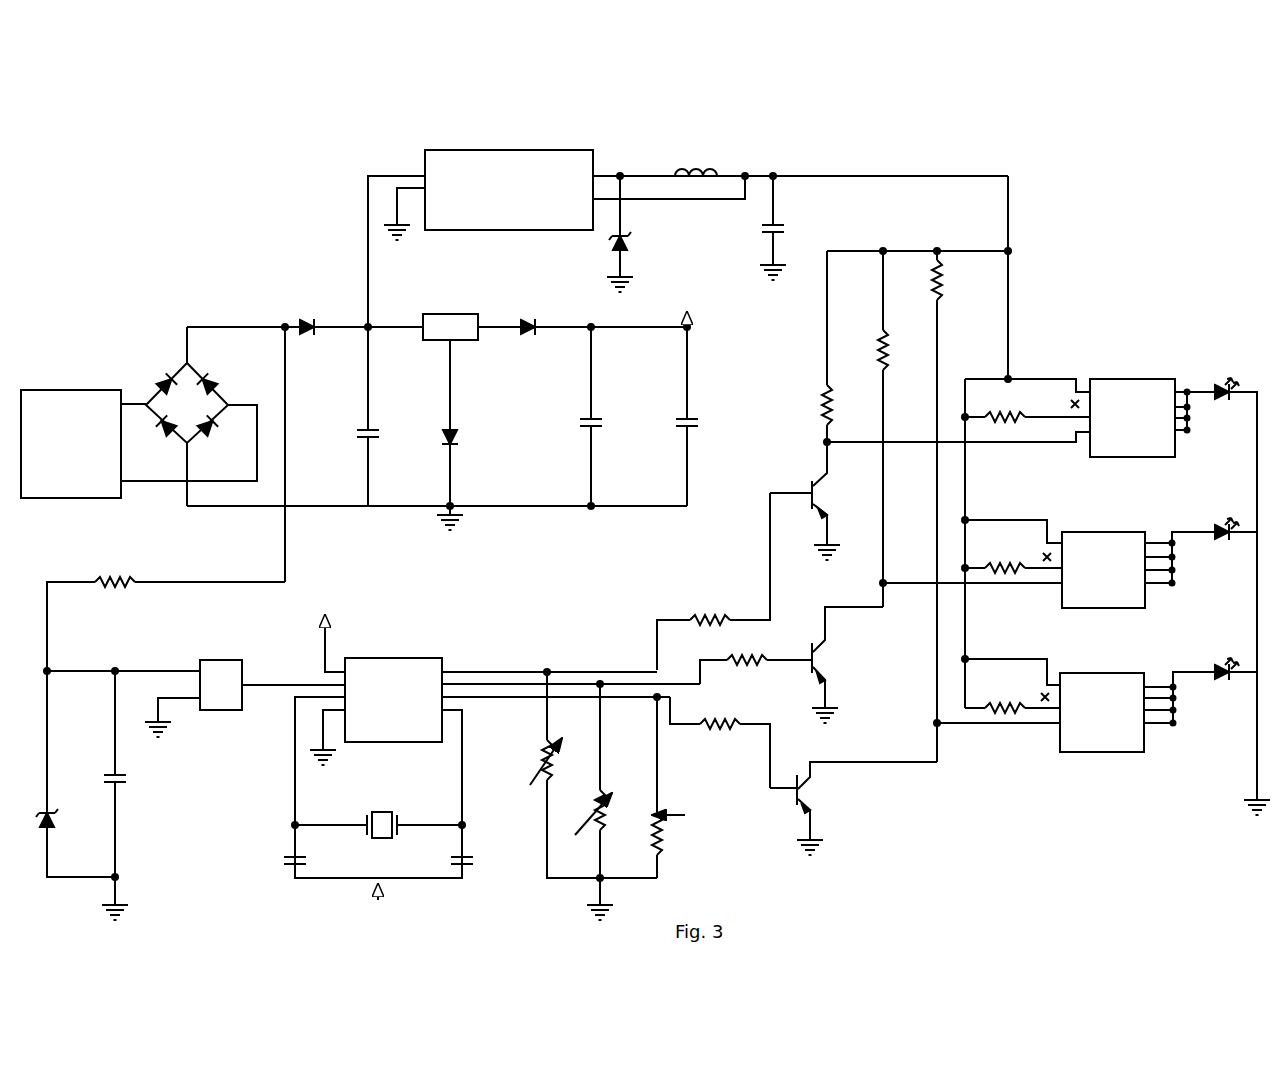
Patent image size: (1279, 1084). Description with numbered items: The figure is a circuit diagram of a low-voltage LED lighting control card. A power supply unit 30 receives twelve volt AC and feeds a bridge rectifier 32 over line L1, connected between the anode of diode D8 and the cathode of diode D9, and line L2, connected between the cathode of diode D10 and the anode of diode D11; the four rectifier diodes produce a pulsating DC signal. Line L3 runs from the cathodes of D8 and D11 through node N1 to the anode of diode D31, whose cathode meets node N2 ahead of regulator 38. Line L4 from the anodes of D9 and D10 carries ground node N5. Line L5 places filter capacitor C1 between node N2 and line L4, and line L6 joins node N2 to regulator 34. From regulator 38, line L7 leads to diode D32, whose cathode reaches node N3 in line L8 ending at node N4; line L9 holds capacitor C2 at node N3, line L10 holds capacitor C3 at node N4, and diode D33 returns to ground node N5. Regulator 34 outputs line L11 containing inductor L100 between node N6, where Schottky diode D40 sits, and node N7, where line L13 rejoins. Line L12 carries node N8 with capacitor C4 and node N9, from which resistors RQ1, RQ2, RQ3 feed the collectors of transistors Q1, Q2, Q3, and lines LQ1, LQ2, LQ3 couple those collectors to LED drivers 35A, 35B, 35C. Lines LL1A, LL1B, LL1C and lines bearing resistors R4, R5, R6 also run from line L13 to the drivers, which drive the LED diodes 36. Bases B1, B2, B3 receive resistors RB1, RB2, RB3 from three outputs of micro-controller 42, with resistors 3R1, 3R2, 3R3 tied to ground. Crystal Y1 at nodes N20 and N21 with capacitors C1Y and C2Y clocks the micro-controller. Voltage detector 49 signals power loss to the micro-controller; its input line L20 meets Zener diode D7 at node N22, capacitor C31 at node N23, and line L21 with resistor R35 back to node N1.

The power supply unit 30 is at (139, 444).
The bridge rectifier 32 is at (187, 416).
The voltage regulator 34 is at (443, 150).
The LED diodes 36 is at (1217, 372).
The regulator 38 is at (423, 314).
The micro-controller 42 is at (505, 697).
The voltage detector 49 is at (235, 668).
The LED driver 35A is at (1152, 405).
The LED driver 35B is at (1159, 557).
The LED driver 35C is at (1158, 700).
The line L1 is at (133, 395).
The second line L2 is at (151, 488).
The line L3 is at (240, 323).
The line L4 is at (520, 510).
The line L5 is at (363, 478).
The line L6 is at (364, 245).
The line L7 is at (497, 318).
The line L8 is at (565, 318).
The line L9 is at (594, 480).
The line L10 is at (690, 478).
The line L11 is at (643, 171).
The line L12 is at (921, 172).
The line L13 is at (680, 203).
The line L20 is at (163, 665).
The line L21 is at (280, 574).
The inductor L100 is at (685, 172).
The node N1 is at (280, 316).
The node N2 is at (386, 316).
The node N3 is at (590, 316).
The node N4 is at (705, 325).
The ground node N5 is at (464, 515).
The node N6 is at (610, 164).
The node N7 is at (742, 164).
The node N8 is at (785, 164).
The node N9 is at (1025, 277).
The node N20 is at (267, 825).
The node N21 is at (486, 825).
The node N22 is at (107, 661).
The node N23 is at (115, 661).
The Zener diode D7 is at (75, 774).
The rectifier diode D8 is at (169, 371).
The rectifier diode D9 is at (159, 433).
The rectifier diode D10 is at (220, 434).
The rectifier diode D11 is at (223, 371).
The diode D31 is at (314, 309).
The diode D32 is at (526, 309).
The diode D33 is at (474, 423).
The Schottky diode D40 is at (645, 241).
The filter capacitor C1 is at (354, 416).
The filter capacitor C2 is at (602, 418).
The filter capacitor C3 is at (699, 416).
The filter capacitor C4 is at (785, 241).
The capacitor C31 is at (132, 804).
The capacitor C1Y is at (272, 861).
The capacitor C2Y is at (482, 861).
The resistor R4 is at (1027, 400).
The resistor R5 is at (1013, 546).
The resistor R6 is at (1012, 686).
The resistor R35 is at (166, 613).
The resistor RQ1 is at (845, 346).
The resistor RQ2 is at (902, 429).
The resistor RQ3 is at (956, 506).
The resistor RB1 is at (713, 581).
The resistor RB2 is at (735, 675).
The resistor RB3 is at (720, 742).
The resistor 3R1 is at (572, 775).
The resistor 3R2 is at (578, 811).
The resistor 3R3 is at (677, 787).
The transistor Q1 is at (840, 501).
The transistor Q2 is at (847, 665).
The transistor Q3 is at (867, 803).
The base B1 is at (791, 505).
The base B2 is at (791, 648).
The base B3 is at (777, 799).
The crystal Y1 is at (378, 798).
The line LQ1 is at (1032, 443).
The line LQ2 is at (995, 586).
The line LQ3 is at (1032, 727).
The line LL1A is at (1069, 373).
The line LL1B is at (990, 519).
The line LL1C is at (1037, 656).